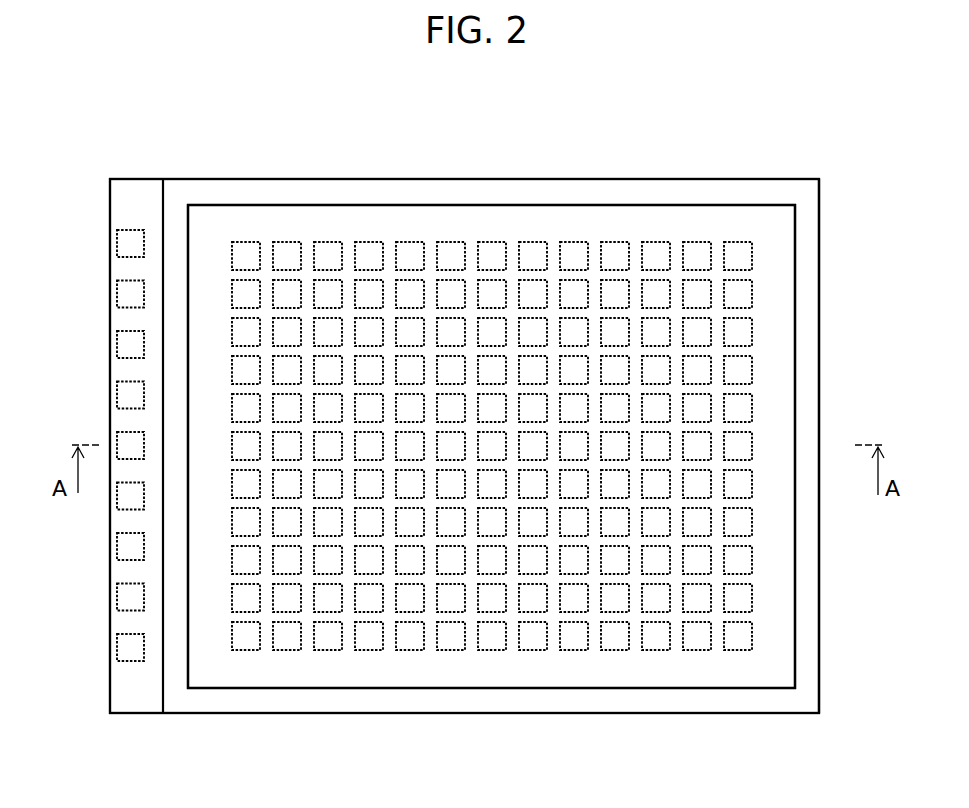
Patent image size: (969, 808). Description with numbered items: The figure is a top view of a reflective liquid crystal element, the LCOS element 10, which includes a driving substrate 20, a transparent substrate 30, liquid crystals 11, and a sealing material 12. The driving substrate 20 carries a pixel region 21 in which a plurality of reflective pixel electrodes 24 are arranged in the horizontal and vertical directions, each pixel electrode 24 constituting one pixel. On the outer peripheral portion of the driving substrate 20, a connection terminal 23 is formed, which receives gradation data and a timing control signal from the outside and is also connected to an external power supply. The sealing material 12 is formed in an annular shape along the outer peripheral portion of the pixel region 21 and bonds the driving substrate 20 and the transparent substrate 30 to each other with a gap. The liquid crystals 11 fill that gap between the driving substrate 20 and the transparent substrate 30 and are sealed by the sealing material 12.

The LCOS element 10 is at (539, 137).
The liquid crystals 11 is at (782, 398).
The sealing material 12 is at (805, 357).
The driving substrate 20 is at (822, 570).
The pixel region 21 is at (763, 647).
The connection terminal 23 is at (122, 343).
The pixel electrode 24 is at (322, 248).
The transparent substrate 30 is at (822, 290).